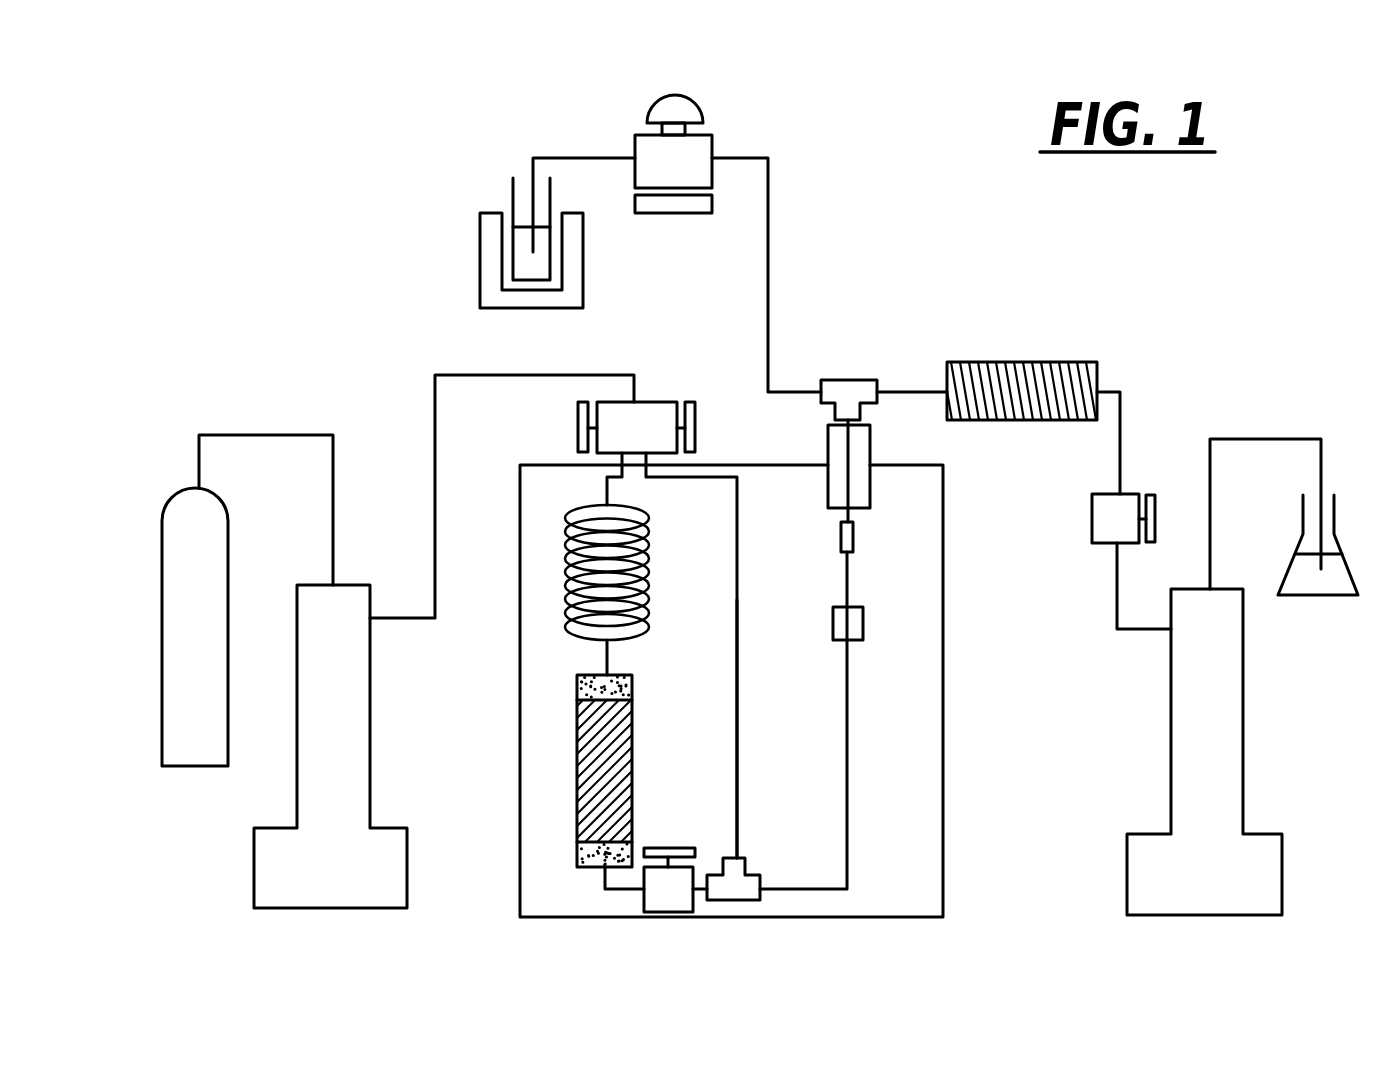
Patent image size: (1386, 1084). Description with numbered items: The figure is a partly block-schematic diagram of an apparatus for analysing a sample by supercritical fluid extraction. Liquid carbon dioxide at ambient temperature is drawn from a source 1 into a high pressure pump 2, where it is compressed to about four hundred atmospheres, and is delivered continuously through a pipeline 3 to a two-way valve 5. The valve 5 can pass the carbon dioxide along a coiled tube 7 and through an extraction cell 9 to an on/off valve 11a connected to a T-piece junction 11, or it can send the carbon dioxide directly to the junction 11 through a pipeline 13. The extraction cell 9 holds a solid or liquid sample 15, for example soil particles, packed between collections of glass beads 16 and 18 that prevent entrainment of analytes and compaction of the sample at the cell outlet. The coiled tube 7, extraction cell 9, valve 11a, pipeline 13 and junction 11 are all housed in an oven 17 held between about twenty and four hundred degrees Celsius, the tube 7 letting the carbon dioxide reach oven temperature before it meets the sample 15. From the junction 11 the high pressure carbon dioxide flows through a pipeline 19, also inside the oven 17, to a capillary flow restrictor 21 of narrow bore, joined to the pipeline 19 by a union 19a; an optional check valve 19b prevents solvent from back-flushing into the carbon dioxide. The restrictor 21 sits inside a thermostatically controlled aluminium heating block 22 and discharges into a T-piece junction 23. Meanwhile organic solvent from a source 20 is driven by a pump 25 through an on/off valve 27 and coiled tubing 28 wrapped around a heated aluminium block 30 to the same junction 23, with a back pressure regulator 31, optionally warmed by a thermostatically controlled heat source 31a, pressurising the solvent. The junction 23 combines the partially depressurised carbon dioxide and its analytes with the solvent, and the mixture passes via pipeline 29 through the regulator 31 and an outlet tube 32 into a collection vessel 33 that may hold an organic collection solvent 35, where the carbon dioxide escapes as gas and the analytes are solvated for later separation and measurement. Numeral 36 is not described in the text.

The source 1 is at (198, 572).
The high pressure pump 2 is at (283, 868).
The pipeline 3 is at (436, 458).
The two-way valve 5 is at (651, 413).
The coiled tube 7 is at (567, 587).
The extraction cell 9 is at (602, 766).
The T-piece junction 11 is at (737, 892).
The on/off valve 11a is at (668, 893).
The pipeline 13 is at (737, 670).
The sample 15 is at (588, 775).
The glass beads 16 is at (577, 855).
The oven 17 is at (940, 820).
The glass beads 18 is at (625, 685).
The pipeline 19 is at (847, 735).
The union 19a is at (842, 536).
The check valve 19b is at (833, 627).
The source 20 is at (1306, 585).
The capillary flow restrictor 21 is at (848, 470).
The aluminium heating block 22 is at (808, 466).
The T-piece junction 23 is at (855, 393).
The pump 25 is at (1225, 718).
The on/off valve 27 is at (1125, 490).
The coiled tubing 28 is at (1017, 378).
The pipeline 29 is at (768, 255).
The heated aluminium block 30 is at (1097, 378).
The back pressure regulator 31 is at (700, 150).
The thermostatically controlled heat source 31a is at (663, 208).
The outlet tube 32 is at (598, 157).
The collection vessel 33 is at (512, 197).
The organic collection solvent 35 is at (527, 267).
The bath 36 is at (573, 275).